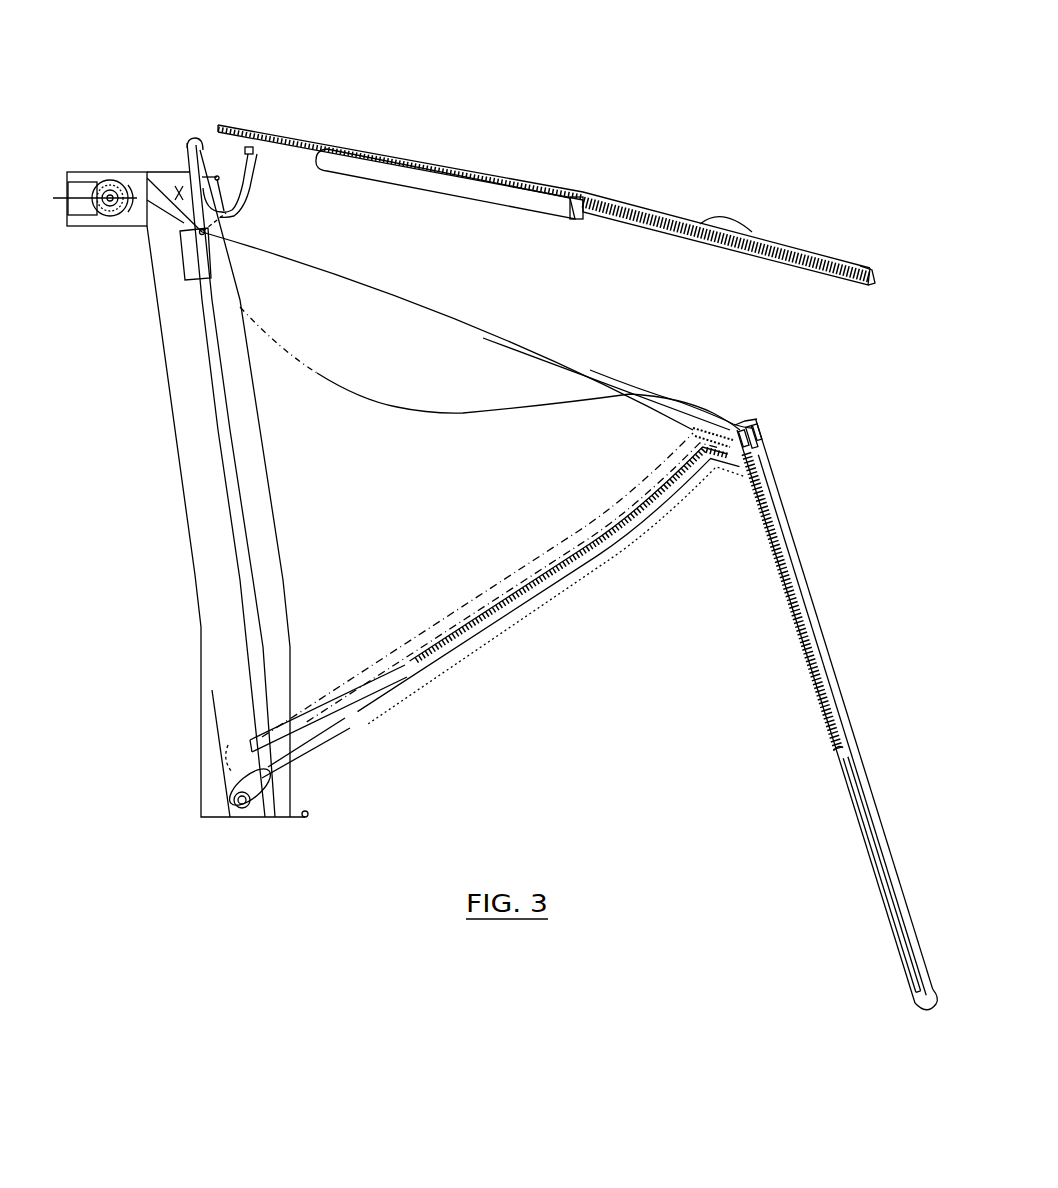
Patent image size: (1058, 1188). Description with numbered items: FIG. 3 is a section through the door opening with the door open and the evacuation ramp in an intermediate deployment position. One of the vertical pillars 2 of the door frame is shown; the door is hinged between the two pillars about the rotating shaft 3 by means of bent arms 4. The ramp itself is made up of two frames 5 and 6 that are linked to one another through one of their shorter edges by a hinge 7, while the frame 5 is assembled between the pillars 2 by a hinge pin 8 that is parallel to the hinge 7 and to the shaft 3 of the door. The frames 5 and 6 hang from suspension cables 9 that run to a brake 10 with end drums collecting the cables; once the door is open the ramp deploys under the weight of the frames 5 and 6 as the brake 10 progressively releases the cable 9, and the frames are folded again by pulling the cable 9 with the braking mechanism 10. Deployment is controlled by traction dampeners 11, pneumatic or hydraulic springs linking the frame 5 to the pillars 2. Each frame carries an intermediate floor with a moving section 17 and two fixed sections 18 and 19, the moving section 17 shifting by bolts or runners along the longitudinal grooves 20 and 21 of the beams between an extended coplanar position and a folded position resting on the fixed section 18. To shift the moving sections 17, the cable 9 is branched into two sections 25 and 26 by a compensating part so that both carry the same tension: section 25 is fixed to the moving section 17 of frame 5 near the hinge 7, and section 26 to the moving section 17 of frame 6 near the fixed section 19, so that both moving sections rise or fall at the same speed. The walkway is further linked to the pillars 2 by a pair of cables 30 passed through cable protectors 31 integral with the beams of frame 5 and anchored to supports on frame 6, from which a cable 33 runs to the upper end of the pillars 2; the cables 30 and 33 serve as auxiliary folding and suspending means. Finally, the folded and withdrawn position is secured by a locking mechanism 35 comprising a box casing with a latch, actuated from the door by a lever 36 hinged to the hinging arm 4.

The vertical pillar 2 is at (182, 503).
The rotating shaft 3 is at (193, 140).
The bent arm 4 is at (256, 165).
The frame 5 is at (578, 707).
The frame 6 is at (828, 714).
The hinge 7 is at (736, 441).
The hinge pin 8 is at (240, 798).
The suspension cable 9 is at (405, 300).
The brake 10 is at (108, 185).
The traction dampeners 11 is at (318, 710).
The moving section 17 is at (597, 543).
The fixed section 18 is at (343, 728).
The fixed section 19 is at (690, 467).
The longitudinal groove 20 is at (577, 538).
The longitudinal groove 21 is at (433, 652).
The cable section 25 is at (563, 367).
The cable section 26 is at (605, 373).
The cable 30 is at (388, 652).
The cable protector 31 is at (690, 438).
The cable 33 is at (393, 407).
The locking mechanism 35 is at (187, 265).
The lever 36 is at (256, 143).